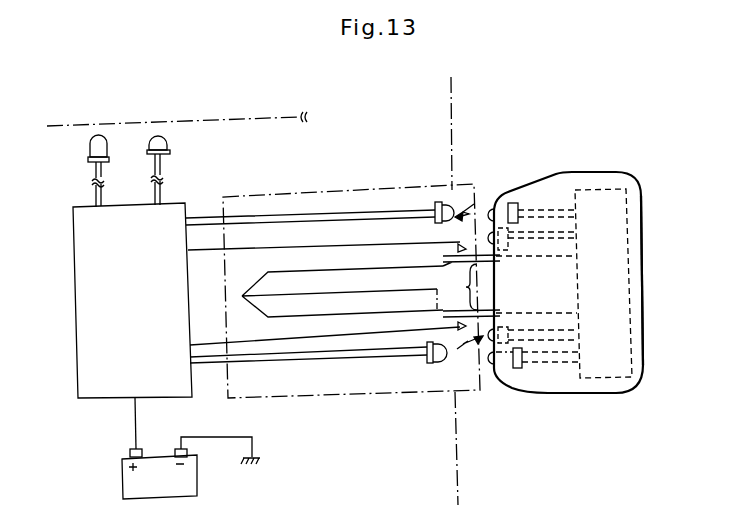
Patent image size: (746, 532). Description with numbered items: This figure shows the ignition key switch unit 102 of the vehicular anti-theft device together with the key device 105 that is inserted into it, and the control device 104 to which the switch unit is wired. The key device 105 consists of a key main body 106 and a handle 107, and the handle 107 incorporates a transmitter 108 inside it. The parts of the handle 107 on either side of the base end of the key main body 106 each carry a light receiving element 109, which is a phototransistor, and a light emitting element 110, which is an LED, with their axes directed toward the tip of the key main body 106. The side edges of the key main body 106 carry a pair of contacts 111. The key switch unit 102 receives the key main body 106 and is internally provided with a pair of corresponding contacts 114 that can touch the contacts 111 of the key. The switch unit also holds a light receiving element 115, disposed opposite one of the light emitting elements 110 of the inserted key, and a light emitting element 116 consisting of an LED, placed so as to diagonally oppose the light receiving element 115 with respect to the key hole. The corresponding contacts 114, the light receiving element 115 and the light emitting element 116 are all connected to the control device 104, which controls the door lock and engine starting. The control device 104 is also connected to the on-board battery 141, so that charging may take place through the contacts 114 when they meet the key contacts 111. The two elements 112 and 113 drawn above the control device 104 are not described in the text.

The key switch unit 102 is at (468, 162).
The control device 104 is at (157, 328).
The key device 105 is at (578, 163).
The key main body 106 is at (320, 270).
The handle 107 is at (641, 213).
The transmitter 108 is at (630, 273).
The light receiving element 109 is at (503, 262).
The light emitting element 110 is at (509, 192).
The contacts 111 is at (466, 287).
The indicator lamp 112 is at (107, 150).
The switch 113 is at (170, 145).
The corresponding contacts 114 is at (457, 250).
The light receiving element 115 is at (438, 200).
The light emitting element 116 is at (431, 365).
The on-board battery 141 is at (197, 487).